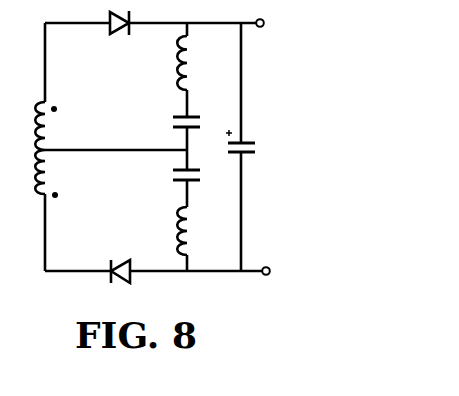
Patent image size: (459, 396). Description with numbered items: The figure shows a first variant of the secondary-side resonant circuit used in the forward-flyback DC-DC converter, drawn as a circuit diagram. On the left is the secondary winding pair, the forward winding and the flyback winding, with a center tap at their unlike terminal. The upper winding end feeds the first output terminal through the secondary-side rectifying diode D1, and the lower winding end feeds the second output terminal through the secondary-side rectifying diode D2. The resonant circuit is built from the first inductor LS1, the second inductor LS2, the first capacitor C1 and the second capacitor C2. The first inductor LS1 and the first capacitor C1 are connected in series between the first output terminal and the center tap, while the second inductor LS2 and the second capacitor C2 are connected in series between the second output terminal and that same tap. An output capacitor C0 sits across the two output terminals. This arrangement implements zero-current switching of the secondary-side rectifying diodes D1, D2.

The secondary-side rectifying diode D1 is at (116, 37).
The secondary-side rectifying diode D2 is at (116, 257).
The first inductor LS1 is at (166, 63).
The second inductor LS2 is at (163, 231).
The first capacitor C1 is at (172, 113).
The second capacitor C2 is at (172, 187).
The output capacitor C0 is at (250, 134).